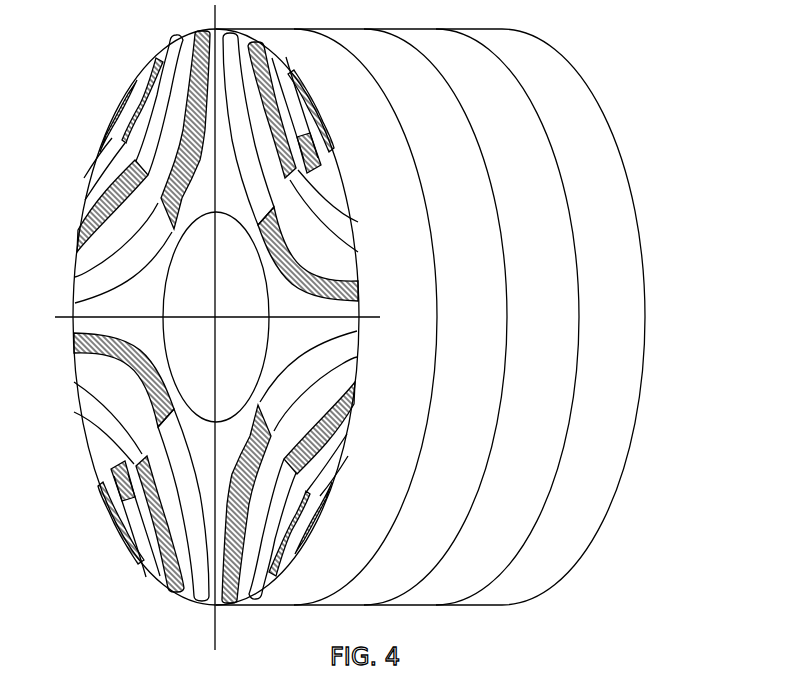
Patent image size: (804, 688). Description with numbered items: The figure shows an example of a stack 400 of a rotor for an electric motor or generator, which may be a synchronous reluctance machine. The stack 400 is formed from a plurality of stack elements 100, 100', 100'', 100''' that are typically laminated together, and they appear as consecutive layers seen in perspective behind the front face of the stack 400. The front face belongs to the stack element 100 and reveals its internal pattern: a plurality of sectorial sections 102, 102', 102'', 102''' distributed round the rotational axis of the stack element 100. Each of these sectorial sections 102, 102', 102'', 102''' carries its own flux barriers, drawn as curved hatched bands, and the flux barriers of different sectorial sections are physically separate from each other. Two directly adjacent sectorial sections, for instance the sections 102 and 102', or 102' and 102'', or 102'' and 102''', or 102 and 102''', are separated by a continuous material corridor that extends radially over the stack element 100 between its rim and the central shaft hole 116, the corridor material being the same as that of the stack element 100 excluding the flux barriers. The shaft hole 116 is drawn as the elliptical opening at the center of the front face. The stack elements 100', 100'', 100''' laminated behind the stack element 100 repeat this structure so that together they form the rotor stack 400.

The stack element 100 is at (365, 317).
The stack element 100' is at (435, 317).
The stack element 100'' is at (507, 317).
The stack element 100''' is at (430, 317).
The sectorial section 102 is at (196, 151).
The sectorial section 102' is at (215, 485).
The sectorial section 102'' is at (105, 421).
The sectorial section 102''' is at (91, 185).
The shaft hole 116 is at (255, 381).
The stack 400 is at (372, 325).